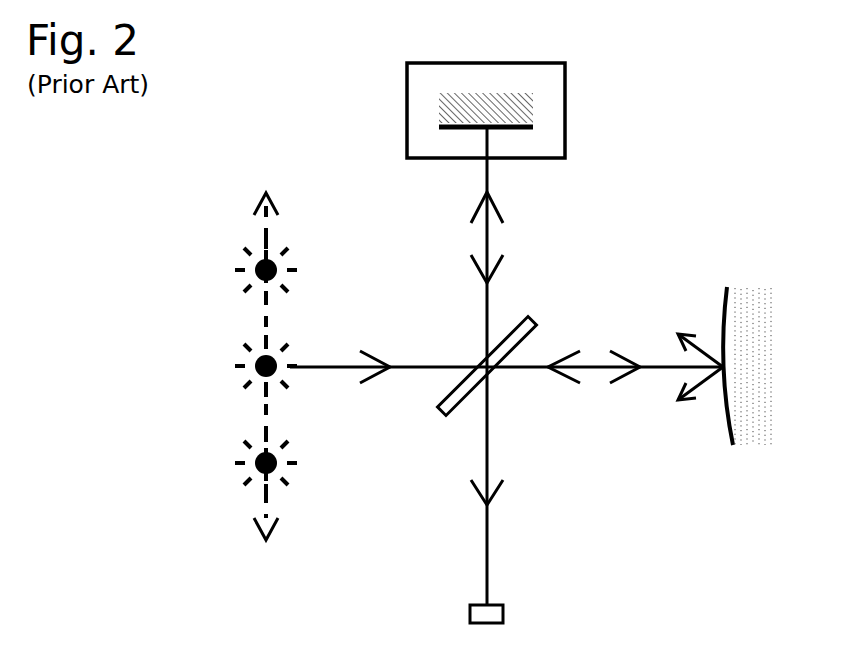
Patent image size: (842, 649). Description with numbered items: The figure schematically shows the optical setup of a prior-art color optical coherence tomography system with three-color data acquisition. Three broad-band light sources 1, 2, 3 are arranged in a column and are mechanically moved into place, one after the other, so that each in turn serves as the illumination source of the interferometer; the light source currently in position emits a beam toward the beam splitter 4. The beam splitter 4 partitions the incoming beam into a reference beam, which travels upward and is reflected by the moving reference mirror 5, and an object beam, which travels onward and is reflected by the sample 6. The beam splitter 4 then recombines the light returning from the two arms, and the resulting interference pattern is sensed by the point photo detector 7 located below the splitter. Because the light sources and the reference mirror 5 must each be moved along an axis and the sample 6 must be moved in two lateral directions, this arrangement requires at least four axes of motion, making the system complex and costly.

The broad-band light source 1 is at (230, 270).
The broad-band light source 2 is at (229, 366).
The broad-band light source 3 is at (229, 463).
The beam splitter 4 is at (473, 361).
The moving reference mirror 5 is at (515, 111).
The sample 6 is at (767, 366).
The point photo detector 7 is at (508, 614).